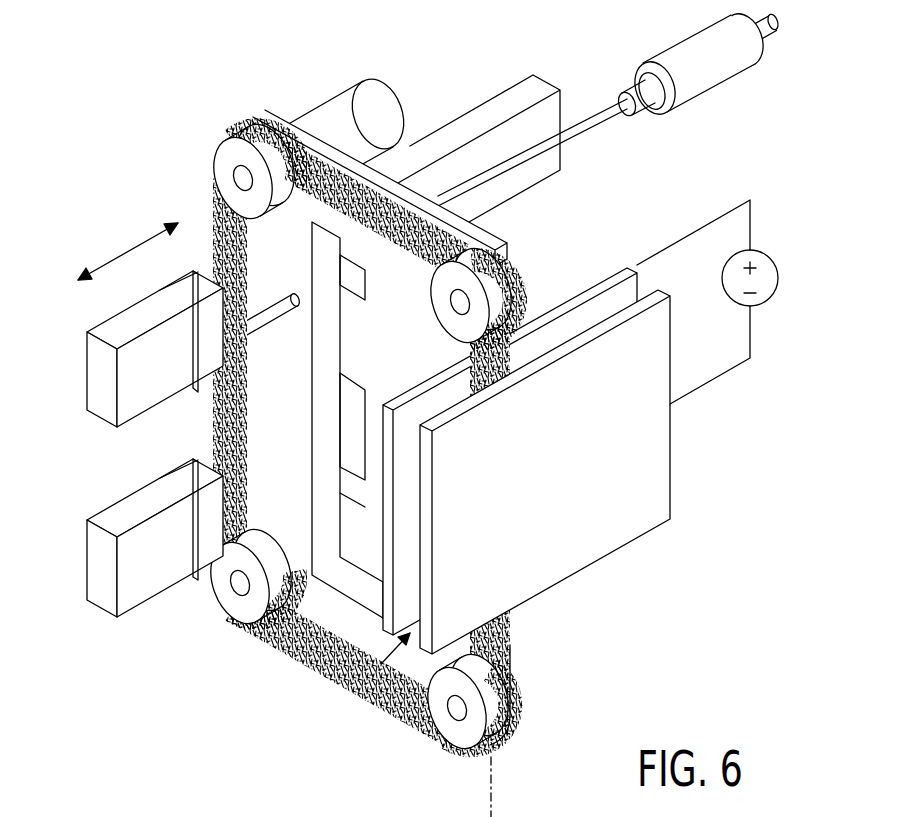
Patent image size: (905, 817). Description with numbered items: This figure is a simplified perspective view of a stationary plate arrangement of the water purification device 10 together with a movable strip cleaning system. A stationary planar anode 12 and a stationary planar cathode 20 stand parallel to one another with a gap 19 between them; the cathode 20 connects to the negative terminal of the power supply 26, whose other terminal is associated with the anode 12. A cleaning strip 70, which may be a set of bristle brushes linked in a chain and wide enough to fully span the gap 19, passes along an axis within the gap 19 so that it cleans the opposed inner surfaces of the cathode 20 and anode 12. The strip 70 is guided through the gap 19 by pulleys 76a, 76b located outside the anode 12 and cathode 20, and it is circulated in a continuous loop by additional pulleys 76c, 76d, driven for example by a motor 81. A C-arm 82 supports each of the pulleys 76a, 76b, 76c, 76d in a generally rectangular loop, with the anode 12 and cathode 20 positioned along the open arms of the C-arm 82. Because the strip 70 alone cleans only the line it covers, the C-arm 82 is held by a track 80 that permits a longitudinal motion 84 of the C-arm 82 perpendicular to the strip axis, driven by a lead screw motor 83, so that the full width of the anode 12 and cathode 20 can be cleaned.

The water purification device 10 is at (784, 69).
The anode 12 is at (613, 267).
The gap 19 is at (382, 663).
The cathode 20 is at (640, 467).
The power supply 26 is at (775, 258).
The cleaning strip 70 is at (217, 433).
The pulley 76a is at (453, 728).
The pulley 76b is at (474, 297).
The pulley 76c is at (218, 157).
The pulley 76d is at (223, 585).
The track 80 is at (102, 397).
The motor 81 is at (347, 110).
The C-arm 82 is at (318, 323).
The lead screw motor 83 is at (675, 50).
The longitudinal motion 84 is at (127, 250).